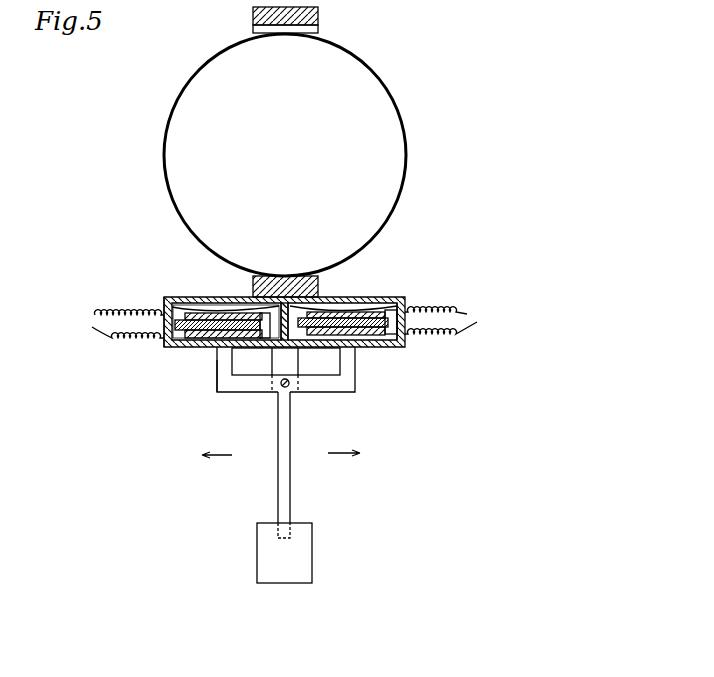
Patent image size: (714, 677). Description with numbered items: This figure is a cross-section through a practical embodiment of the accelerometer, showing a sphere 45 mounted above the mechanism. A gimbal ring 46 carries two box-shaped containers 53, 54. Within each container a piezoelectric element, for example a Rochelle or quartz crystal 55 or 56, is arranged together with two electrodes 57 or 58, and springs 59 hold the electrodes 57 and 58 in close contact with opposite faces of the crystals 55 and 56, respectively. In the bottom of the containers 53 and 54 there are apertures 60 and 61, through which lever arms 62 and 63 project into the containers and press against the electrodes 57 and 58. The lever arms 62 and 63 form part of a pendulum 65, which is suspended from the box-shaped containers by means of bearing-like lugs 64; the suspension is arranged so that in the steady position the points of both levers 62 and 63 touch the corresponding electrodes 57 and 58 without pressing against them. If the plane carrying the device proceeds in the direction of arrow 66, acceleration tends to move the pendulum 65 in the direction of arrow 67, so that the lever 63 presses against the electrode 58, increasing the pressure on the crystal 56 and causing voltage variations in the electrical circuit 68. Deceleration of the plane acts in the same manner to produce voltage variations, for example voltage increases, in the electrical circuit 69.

The spherical float / ball 45 is at (386, 134).
The gimbal ring 46 is at (318, 8).
The box-shaped container 53 is at (165, 300).
The box-shaped container 54 is at (399, 303).
The crystal 55 is at (208, 328).
The crystal 56 is at (364, 312).
The electrode 57 is at (180, 316).
The electrode 58 is at (338, 309).
The spring 59 is at (197, 298).
The aperture 60 is at (220, 348).
The aperture 61 is at (352, 343).
The lever arm 62 is at (223, 368).
The lever arm 63 is at (352, 373).
The bearing-like lug 64 is at (291, 360).
The pendulum 65 is at (306, 545).
The arrow 66 is at (217, 466).
The arrow 67 is at (344, 466).
The electrical circuit 68 is at (449, 320).
The electrical circuit 69 is at (118, 321).